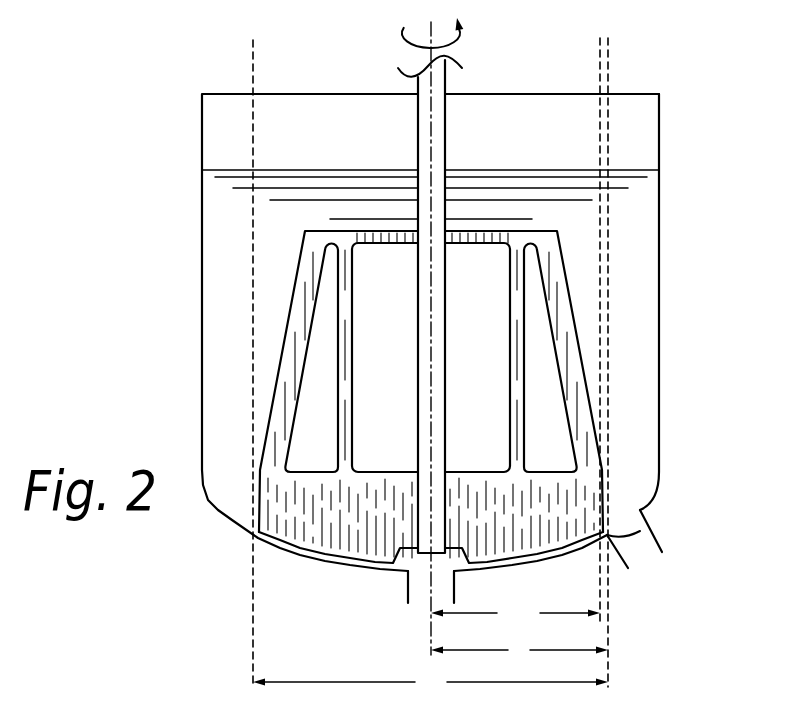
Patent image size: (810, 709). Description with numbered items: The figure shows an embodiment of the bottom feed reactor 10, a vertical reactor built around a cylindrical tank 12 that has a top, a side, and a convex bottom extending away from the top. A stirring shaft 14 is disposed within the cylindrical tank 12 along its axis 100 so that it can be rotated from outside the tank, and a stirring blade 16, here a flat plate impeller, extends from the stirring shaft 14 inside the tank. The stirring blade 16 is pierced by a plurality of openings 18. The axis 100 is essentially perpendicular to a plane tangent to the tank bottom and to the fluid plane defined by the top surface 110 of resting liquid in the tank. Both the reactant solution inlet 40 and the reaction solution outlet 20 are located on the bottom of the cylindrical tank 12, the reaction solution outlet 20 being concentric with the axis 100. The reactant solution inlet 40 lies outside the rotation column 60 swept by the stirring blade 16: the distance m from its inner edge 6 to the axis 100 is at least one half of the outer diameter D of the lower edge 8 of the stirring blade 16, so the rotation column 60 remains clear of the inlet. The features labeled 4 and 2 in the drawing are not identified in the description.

The bottom feed reactor 10 is at (464, 356).
The cylindrical tank 12 is at (479, 302).
The vessel side wall 4 is at (657, 275).
The lower edge 8 is at (327, 553).
The reaction solution outlet 20 is at (418, 596).
The inner edge 6 is at (641, 532).
The reactant solution inlet 40 is at (643, 558).
The top surface 110 is at (288, 168).
The stirring shaft 14 is at (418, 128).
The axis 100 is at (445, 160).
The stirring blade 16 is at (432, 397).
The openings 18 is at (545, 412).
The impeller bottom edge 2 is at (603, 533).
The rotation column 60 is at (430, 682).